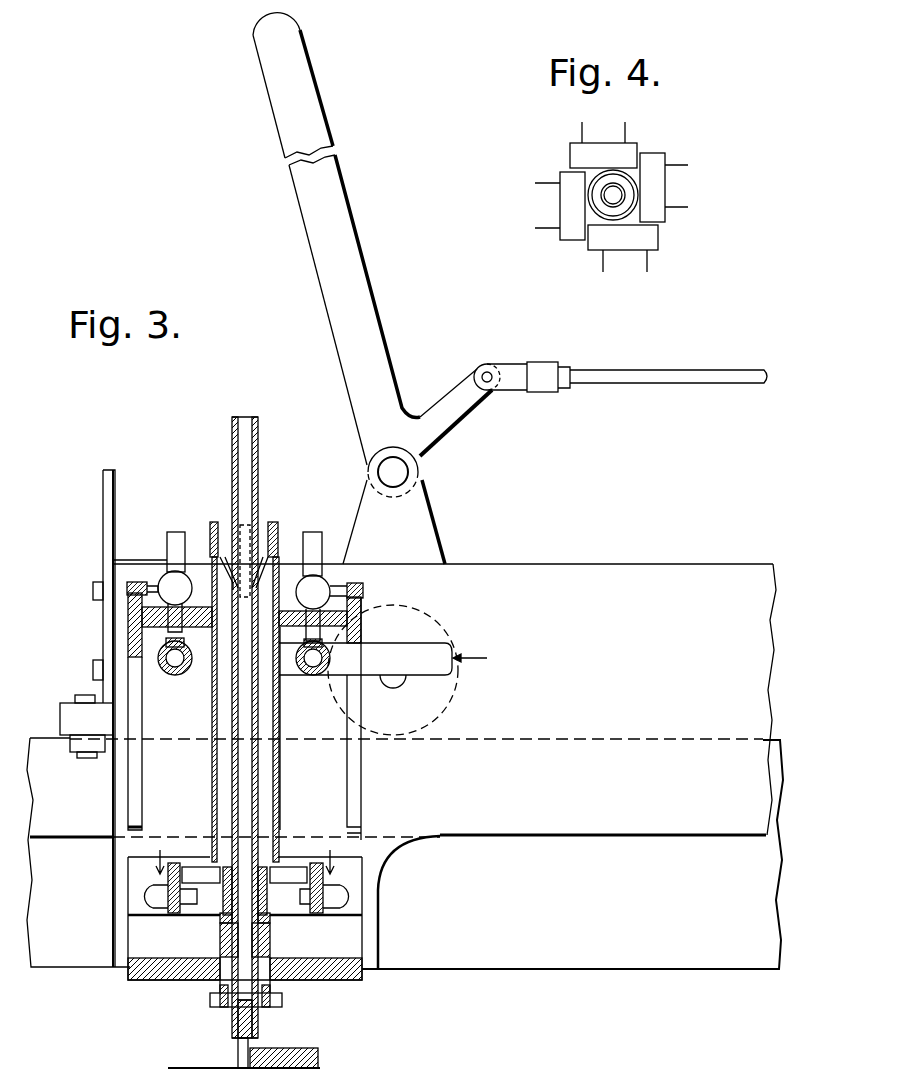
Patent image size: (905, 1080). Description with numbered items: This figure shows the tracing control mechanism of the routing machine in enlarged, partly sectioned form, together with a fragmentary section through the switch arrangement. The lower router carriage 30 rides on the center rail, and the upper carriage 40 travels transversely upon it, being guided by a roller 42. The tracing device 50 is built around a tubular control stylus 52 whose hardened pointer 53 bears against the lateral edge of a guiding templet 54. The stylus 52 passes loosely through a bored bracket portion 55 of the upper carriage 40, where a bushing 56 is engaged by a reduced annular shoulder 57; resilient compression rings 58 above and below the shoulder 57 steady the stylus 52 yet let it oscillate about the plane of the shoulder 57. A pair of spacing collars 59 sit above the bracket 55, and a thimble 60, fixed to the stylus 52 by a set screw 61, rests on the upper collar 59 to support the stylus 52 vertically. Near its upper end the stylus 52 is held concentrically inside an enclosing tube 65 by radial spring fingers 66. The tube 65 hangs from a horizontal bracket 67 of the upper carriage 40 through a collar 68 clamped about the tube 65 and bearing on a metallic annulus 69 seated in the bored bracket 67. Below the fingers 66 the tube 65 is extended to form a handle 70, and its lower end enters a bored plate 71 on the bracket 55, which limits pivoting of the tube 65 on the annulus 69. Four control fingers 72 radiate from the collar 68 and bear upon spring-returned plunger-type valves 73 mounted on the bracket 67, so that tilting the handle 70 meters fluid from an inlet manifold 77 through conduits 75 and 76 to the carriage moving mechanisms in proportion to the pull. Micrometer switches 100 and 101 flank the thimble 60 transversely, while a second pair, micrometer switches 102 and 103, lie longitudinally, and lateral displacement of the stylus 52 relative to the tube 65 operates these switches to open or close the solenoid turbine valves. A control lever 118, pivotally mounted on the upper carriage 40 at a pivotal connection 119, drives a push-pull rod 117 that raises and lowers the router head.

In FIG. 3, the lower router carriage 30 is at (697, 980).
In FIG. 3, the upper carriage 40 is at (672, 562).
In FIG. 3, the roller 42 is at (460, 693).
In FIG. 3, the tracing device 50 is at (118, 646).
In FIG. 3, the control stylus 52 is at (241, 443).
In FIG. 4, the control stylus 52 is at (620, 205).
In FIG. 3, the pointer 53 is at (238, 1050).
In FIG. 3, the guiding templet 54 is at (300, 1060).
In FIG. 3, the bracket portion 55 is at (345, 975).
In FIG. 3, the bushing 56 is at (276, 1019).
In FIG. 3, the reduced annular shoulder 57 is at (283, 975).
In FIG. 3, the resilient compression rings 58 is at (222, 978).
In FIG. 3, the spacing collars 59 is at (205, 960).
In FIG. 3, the thimble 60 is at (270, 920).
In FIG. 4, the thimble 60 is at (640, 185).
In FIG. 3, the set screw 61 is at (222, 918).
In FIG. 3, the enclosing tube 65 is at (205, 721).
In FIG. 3, the spring fingers 66 is at (260, 558).
In FIG. 3, the bracket 67 is at (128, 620).
In FIG. 3, the collar 68 is at (203, 587).
In FIG. 3, the metallic annulus 69 is at (203, 617).
In FIG. 3, the handle 70 is at (280, 762).
In FIG. 3, the bored plate 71 is at (130, 855).
In FIG. 3, the control fingers 72 is at (185, 575).
In FIG. 3, the plunger-type valves 73 is at (165, 586).
In FIG. 3, the conduit 75 is at (172, 566).
In FIG. 3, the conduit 76 is at (313, 532).
In FIG. 3, the inlet manifold 77 is at (296, 678).
In FIG. 3, the micrometer switch 100 is at (193, 857).
In FIG. 4, the micrometer switch 100 is at (570, 200).
In FIG. 3, the micrometer switch 101 is at (300, 850).
In FIG. 4, the micrometer switch 101 is at (655, 197).
In FIG. 4, the micrometer switch 102 is at (600, 238).
In FIG. 3, the micrometer switch 103 is at (215, 822).
In FIG. 4, the micrometer switch 103 is at (577, 152).
In FIG. 3, the push-pull rod 117 is at (669, 371).
In FIG. 3, the control lever 118 is at (363, 322).
In FIG. 3, the pivotal connection 119 is at (393, 472).